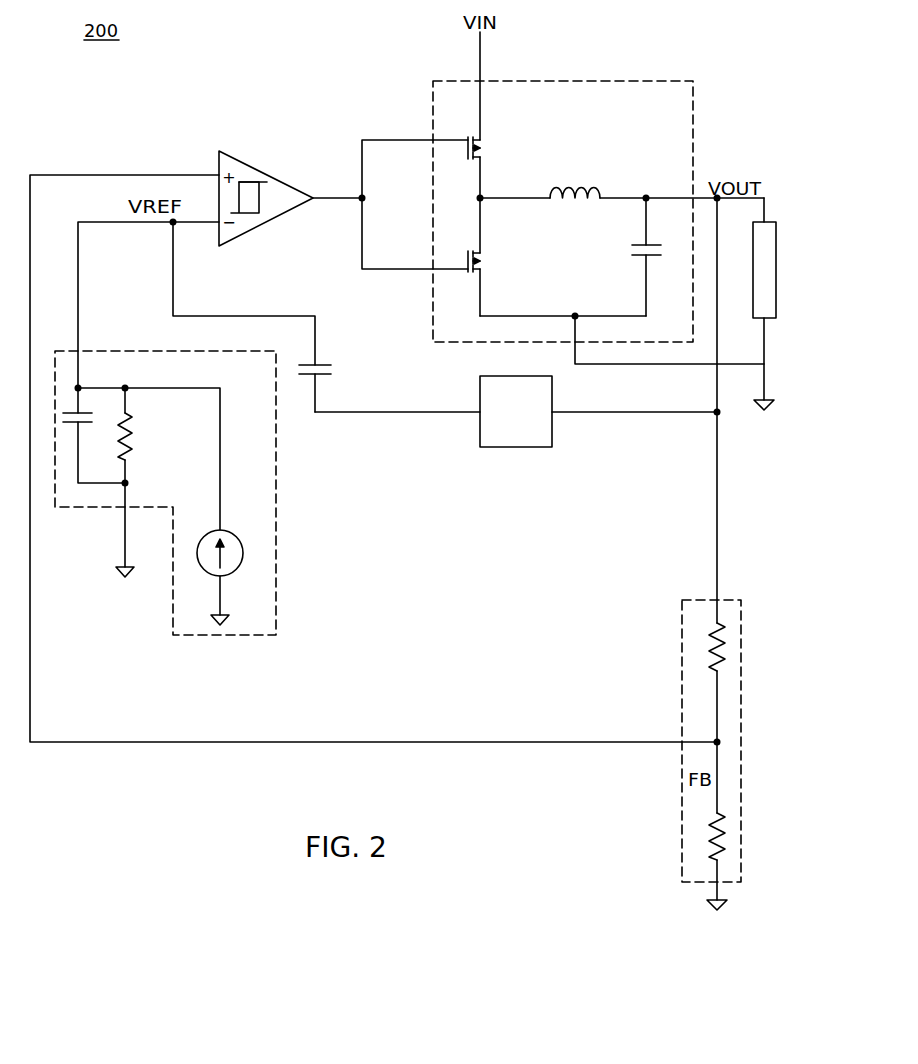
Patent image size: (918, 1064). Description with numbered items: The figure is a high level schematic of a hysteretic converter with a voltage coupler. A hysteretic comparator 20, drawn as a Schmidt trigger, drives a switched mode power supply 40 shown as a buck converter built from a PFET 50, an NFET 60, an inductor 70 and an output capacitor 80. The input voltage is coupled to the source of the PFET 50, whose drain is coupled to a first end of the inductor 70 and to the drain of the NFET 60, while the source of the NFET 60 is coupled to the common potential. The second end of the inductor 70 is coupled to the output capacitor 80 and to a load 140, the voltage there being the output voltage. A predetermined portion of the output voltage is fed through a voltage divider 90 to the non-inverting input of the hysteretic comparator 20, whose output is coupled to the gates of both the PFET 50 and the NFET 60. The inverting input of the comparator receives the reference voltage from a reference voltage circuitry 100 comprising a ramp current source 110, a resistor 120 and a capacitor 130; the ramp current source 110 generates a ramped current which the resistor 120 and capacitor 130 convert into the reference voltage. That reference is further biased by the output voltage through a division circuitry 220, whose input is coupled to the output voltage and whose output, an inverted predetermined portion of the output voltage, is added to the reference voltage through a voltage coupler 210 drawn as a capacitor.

The hysteretic comparator 20 is at (265, 225).
The switched mode power supply 40 is at (693, 128).
The PFET 50 is at (485, 140).
The NFET 60 is at (485, 269).
The inductor 70 is at (600, 185).
The output capacitor 80 is at (642, 257).
The voltage divider 90 is at (741, 629).
The reference voltage circuitry 100 is at (230, 637).
The ramp current source 110 is at (243, 565).
The resistor 120 is at (135, 437).
The capacitor 130 is at (92, 418).
The load 140 is at (776, 268).
The voltage coupler 210 is at (335, 365).
The division circuitry 220 is at (552, 435).